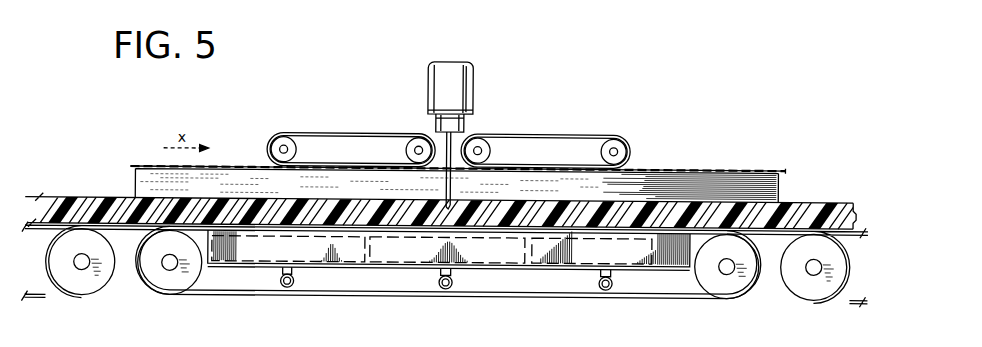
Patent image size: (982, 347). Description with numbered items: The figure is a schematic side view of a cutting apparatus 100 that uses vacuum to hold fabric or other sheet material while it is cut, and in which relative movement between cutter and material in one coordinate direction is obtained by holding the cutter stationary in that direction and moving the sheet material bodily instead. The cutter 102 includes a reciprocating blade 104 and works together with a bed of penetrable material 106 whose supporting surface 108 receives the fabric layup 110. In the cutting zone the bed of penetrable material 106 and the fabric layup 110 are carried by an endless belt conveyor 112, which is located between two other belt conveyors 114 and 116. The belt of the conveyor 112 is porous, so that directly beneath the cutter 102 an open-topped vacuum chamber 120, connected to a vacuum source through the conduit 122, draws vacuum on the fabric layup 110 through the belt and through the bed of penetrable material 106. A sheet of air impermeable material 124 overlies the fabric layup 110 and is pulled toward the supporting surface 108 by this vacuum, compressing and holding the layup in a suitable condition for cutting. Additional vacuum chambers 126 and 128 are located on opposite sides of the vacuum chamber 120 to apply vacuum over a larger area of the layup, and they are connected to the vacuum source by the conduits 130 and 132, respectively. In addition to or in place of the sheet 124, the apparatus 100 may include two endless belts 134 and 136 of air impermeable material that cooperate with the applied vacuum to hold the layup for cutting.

The cutting apparatus 100 is at (483, 126).
The cutter 102 is at (472, 73).
The reciprocating blade 104 is at (452, 143).
The bed of penetrable material 106 is at (92, 210).
The supporting surface 108 is at (67, 199).
The fabric layup 110 is at (778, 185).
The endless belt conveyor 112 is at (448, 284).
The belt conveyor 114 is at (76, 309).
The belt conveyor 116 is at (784, 298).
The vacuum chamber 120 is at (463, 267).
The conduit 122 is at (439, 282).
The sheet of air impermeable material 124 is at (657, 167).
The vacuum chamber 126 is at (303, 256).
The vacuum chamber 128 is at (625, 257).
The conduit 130 is at (280, 280).
The conduit 132 is at (599, 282).
The endless belt 134 is at (351, 133).
The endless belt 136 is at (548, 137).